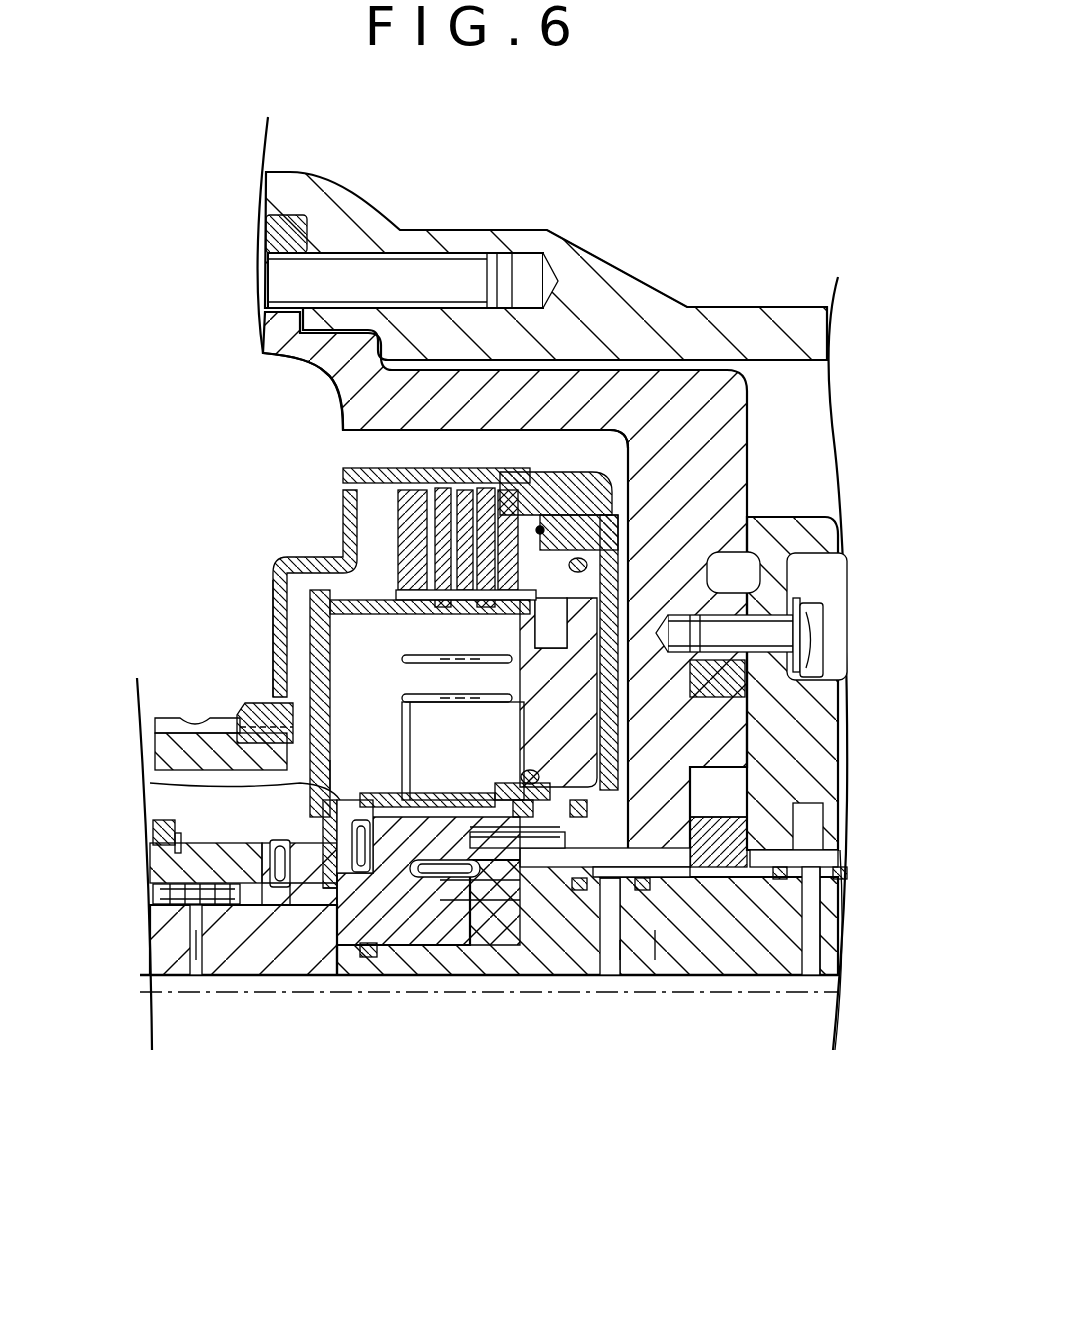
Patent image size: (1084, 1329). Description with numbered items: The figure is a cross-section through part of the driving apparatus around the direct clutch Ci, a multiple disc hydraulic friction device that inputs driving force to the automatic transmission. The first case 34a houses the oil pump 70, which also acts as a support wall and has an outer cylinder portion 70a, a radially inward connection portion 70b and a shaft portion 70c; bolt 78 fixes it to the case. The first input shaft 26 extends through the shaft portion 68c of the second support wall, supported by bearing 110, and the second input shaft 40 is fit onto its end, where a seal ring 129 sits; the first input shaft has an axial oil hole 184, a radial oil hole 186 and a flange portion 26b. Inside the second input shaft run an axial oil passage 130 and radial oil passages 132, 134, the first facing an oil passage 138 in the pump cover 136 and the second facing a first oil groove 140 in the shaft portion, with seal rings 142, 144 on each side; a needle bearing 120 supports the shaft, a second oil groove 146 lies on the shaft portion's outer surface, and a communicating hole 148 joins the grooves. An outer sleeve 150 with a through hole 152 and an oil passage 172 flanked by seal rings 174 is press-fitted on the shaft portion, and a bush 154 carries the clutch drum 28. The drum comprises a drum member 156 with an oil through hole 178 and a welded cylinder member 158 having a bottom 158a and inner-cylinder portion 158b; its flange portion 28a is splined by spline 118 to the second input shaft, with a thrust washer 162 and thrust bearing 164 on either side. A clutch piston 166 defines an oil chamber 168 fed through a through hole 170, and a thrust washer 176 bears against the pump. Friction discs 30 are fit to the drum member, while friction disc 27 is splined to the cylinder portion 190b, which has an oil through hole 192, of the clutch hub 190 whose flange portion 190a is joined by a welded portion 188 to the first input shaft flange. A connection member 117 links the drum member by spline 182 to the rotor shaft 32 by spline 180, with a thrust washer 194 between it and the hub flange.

The bolt 78 is at (375, 280).
The outer cylinder portion 70a is at (552, 392).
The first case 34a is at (625, 330).
The clutch drum 28 is at (623, 360).
The oil pump 70 is at (783, 456).
The connection portion 70b is at (717, 487).
The direct clutch Ci is at (303, 452).
The drum member 156 is at (338, 460).
The oil through hole 178 is at (500, 470).
The friction discs 30 is at (453, 490).
The spline 182 is at (326, 493).
The clutch hub 190 is at (323, 583).
The connection member 117 is at (277, 597).
The cylinder member 158 is at (650, 560).
The cover 136 is at (830, 548).
The bottom 158a is at (713, 603).
The flange portion 190a is at (317, 650).
The spline 180 is at (230, 725).
The thrust washer 194 is at (283, 700).
The rotor shaft 32 is at (207, 758).
The cylinder portion 190b is at (372, 614).
The friction disc 27 is at (450, 605).
The oil through hole 192 is at (488, 617).
The welded portion 188 is at (347, 753).
The clutch piston 166 is at (530, 722).
The inner-cylinder portion 158b is at (462, 790).
The oil chamber 168 is at (738, 695).
The thrust washer 176 is at (722, 730).
The through hole 170 is at (727, 760).
The oil passage 172 is at (747, 787).
The flange portion 28a is at (240, 786).
The flange portion 26b is at (330, 813).
The shaft portion 68c is at (160, 870).
The bearing 110 is at (160, 893).
The thrust washer 162 is at (190, 910).
The radial oil hole 186 is at (196, 947).
The oil passage 138 is at (800, 830).
The seal rings 142 is at (787, 877).
The radial oil passage 132 is at (820, 918).
The axial oil passage 130 is at (793, 982).
The axial oil hole 184 is at (180, 967).
The first input shaft 26 is at (240, 987).
The thrust bearing 164 is at (320, 930).
The seal ring 129 is at (367, 957).
The spline 118 is at (372, 960).
The bush 154 is at (430, 840).
The outer sleeve 150 is at (480, 847).
The shaft portion 70c is at (457, 875).
The needle bearing 120 is at (480, 895).
The through hole 152 is at (523, 883).
The seal rings 174 is at (582, 882).
The second oil groove 146 is at (567, 860).
The communicating hole 148 is at (547, 840).
The seal rings 144 is at (660, 940).
The radial oil passage 134 is at (607, 960).
The first oil groove 140 is at (620, 937).
The second input shaft 40 is at (700, 967).